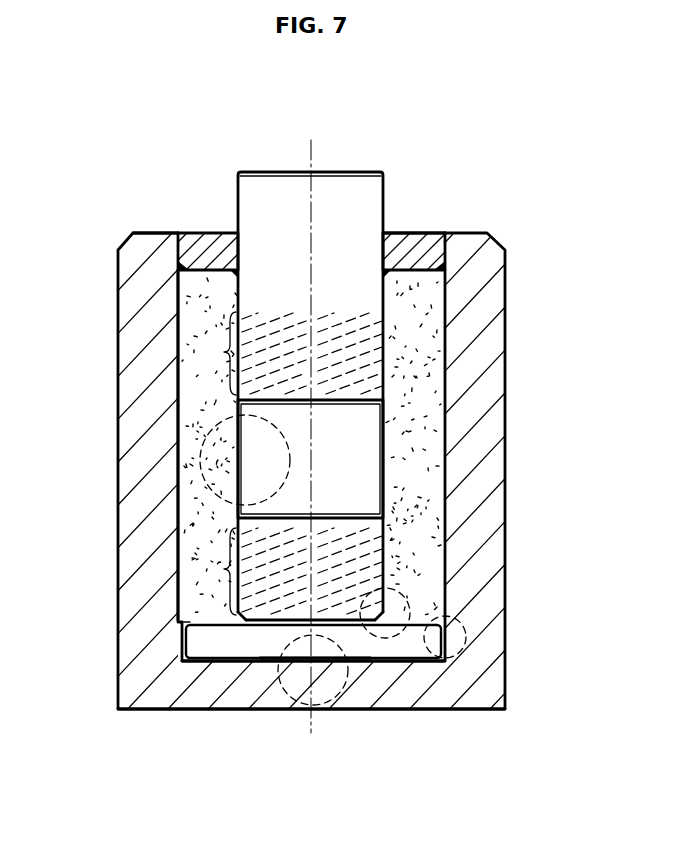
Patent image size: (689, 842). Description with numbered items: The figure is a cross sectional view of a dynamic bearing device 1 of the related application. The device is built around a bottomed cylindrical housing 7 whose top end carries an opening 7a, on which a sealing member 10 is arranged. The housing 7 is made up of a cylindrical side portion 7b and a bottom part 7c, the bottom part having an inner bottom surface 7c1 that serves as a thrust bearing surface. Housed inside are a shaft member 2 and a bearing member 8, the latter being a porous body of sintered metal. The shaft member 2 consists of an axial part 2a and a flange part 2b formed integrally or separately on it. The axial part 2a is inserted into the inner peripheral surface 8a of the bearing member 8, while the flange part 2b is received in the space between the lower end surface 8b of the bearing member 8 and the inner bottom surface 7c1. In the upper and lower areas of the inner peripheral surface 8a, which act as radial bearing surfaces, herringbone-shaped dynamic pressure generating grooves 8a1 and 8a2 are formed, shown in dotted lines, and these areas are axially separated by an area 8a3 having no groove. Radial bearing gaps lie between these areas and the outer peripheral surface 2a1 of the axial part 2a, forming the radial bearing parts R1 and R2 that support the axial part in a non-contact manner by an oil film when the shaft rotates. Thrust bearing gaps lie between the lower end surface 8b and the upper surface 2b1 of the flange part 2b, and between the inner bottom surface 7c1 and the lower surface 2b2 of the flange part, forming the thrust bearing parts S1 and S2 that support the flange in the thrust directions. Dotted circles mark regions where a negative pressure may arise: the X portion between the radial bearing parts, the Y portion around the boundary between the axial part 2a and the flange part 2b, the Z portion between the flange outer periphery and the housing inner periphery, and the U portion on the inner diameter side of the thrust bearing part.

The dynamic bearing device 1 is at (522, 205).
The shaft member 2 is at (397, 195).
The axial part 2a is at (336, 182).
The outer peripheral surface 2a1 is at (236, 280).
The flange part 2b is at (440, 641).
The upper surface 2b1 is at (419, 600).
The lower surface 2b2 is at (446, 658).
The housing 7 is at (106, 242).
The opening 7a is at (170, 228).
The cylindrical side portion 7b is at (120, 347).
The bottom part 7c is at (395, 712).
The inner bottom surface 7c1 is at (213, 674).
The bearing member 8 is at (445, 290).
The inner peripheral surface 8a is at (372, 298).
The dynamic pressure generating grooves 8a1 is at (375, 345).
The dynamic pressure generating grooves 8a2 is at (392, 530).
The area having no dynamic pressure generating groove 8a3 is at (362, 455).
The lower end surface 8b is at (207, 628).
The sealing member 10 is at (443, 232).
The radial bearing part R1 is at (223, 358).
The radial bearing part R2 is at (212, 569).
The thrust bearing part S1 is at (211, 609).
The thrust bearing part S2 is at (178, 710).
The X portion X is at (198, 453).
The Y portion Y is at (402, 595).
The Z portion Z is at (468, 628).
The U portion U is at (310, 714).